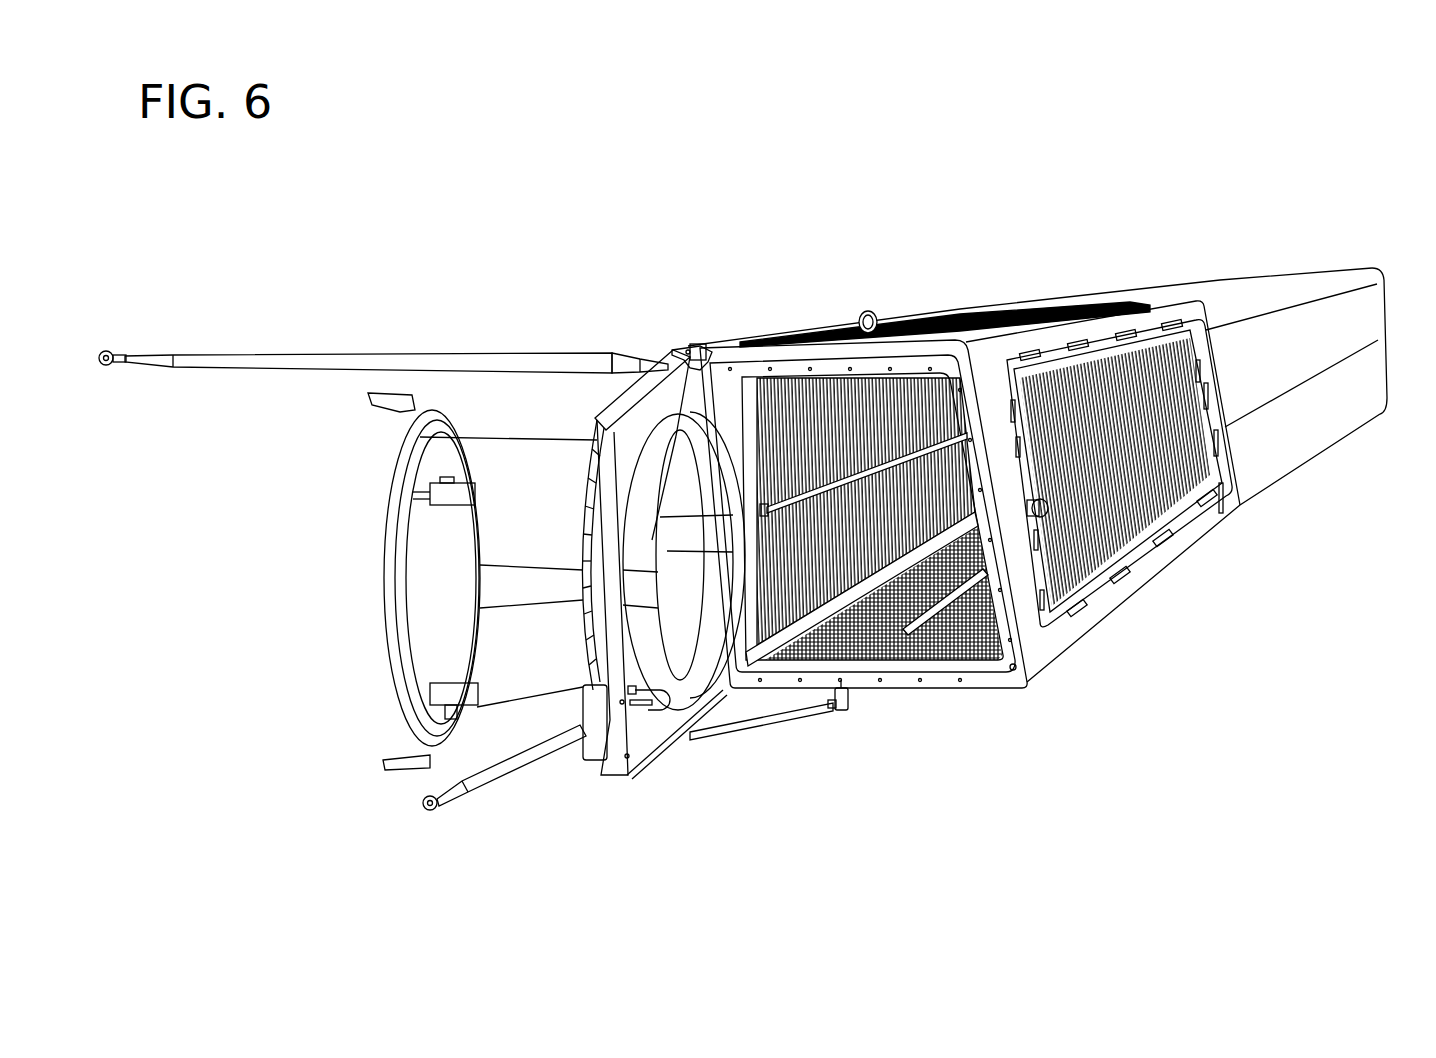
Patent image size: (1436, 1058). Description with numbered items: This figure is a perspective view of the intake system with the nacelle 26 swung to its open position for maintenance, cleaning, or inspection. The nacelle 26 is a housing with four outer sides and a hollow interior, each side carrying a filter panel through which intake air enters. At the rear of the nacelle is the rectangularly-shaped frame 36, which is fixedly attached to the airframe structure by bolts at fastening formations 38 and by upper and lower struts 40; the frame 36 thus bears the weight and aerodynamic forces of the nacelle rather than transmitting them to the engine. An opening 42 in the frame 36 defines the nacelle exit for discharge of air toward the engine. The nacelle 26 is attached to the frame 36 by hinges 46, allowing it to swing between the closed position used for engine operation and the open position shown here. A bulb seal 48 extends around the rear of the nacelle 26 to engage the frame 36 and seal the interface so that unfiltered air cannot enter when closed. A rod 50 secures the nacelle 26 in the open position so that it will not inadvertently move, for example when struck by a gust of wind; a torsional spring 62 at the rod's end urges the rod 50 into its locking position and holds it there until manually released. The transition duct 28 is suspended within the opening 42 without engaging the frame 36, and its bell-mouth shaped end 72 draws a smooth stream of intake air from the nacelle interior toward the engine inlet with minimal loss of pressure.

The nacelle 26 is at (940, 315).
The transition duct 28 is at (478, 430).
The frame 36 is at (600, 405).
The fastening formations 38 is at (597, 450).
The struts 40 is at (288, 357).
The opening 42 is at (670, 367).
The hinges 46 is at (680, 348).
The bulb seal 48 is at (808, 370).
The rod 50 is at (755, 723).
The torsional spring 62 is at (850, 693).
The bell-mouth shaped end 72 is at (698, 697).